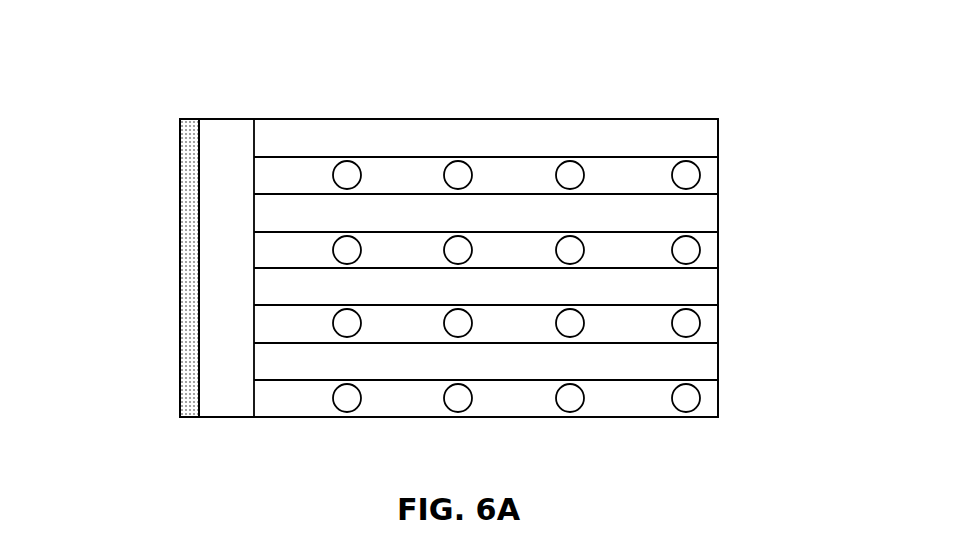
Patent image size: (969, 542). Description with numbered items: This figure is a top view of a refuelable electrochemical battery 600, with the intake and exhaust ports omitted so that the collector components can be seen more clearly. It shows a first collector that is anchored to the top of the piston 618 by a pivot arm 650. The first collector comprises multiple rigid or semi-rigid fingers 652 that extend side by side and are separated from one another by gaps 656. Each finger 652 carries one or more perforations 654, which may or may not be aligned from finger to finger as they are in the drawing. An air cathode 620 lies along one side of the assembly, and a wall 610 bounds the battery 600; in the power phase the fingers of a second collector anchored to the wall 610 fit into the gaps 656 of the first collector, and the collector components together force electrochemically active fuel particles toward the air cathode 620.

The battery 600 is at (790, 85).
The wall 610 is at (273, 120).
The piston 618 is at (227, 390).
The air cathode 620 is at (126, 268).
The pivot arm 650 is at (254, 130).
The fingers 652 is at (708, 170).
The perforations 654 is at (673, 323).
The gaps 656 is at (393, 212).